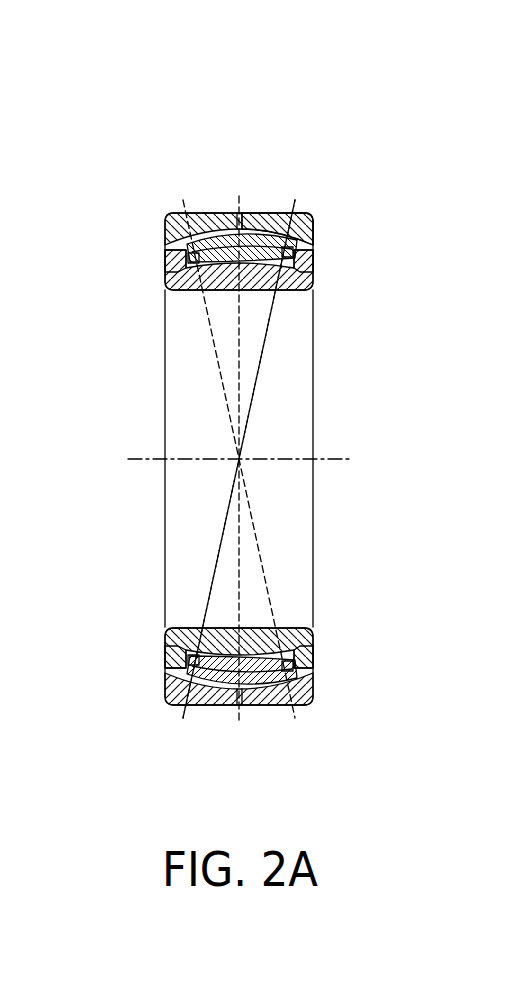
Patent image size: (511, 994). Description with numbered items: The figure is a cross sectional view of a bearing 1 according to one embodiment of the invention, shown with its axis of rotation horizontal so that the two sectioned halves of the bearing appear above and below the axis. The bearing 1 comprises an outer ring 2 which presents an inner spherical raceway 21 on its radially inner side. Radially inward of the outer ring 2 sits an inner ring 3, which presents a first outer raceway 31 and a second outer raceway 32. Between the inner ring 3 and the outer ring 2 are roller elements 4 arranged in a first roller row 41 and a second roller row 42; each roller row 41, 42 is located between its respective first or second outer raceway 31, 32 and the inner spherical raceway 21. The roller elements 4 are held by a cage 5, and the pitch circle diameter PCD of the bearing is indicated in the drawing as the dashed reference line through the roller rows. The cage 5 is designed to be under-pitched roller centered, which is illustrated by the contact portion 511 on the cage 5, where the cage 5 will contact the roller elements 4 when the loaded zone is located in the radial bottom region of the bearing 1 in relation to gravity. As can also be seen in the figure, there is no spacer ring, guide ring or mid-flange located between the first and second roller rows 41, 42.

The bearing 1 is at (130, 170).
The outer ring 2 is at (272, 213).
The inner spherical raceway 21 is at (290, 213).
The inner ring 3 is at (164, 290).
The first outer raceway 31 is at (172, 262).
The second outer raceway 32 is at (305, 260).
The roller elements 4 is at (245, 459).
The first roller row 41 is at (186, 236).
The second roller row 42 is at (313, 677).
The cage 5 is at (278, 289).
The contact portion 511 is at (170, 652).
The pitch circle diameter PCD is at (266, 705).